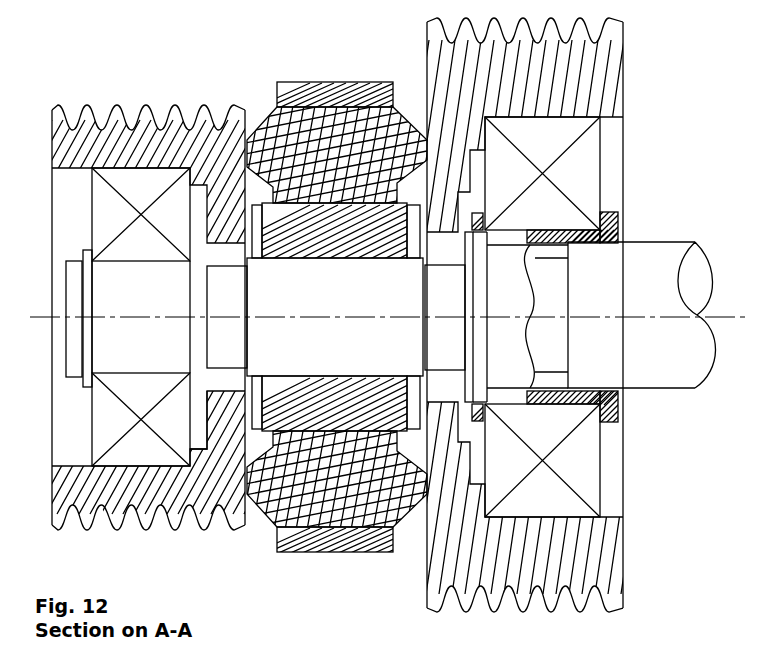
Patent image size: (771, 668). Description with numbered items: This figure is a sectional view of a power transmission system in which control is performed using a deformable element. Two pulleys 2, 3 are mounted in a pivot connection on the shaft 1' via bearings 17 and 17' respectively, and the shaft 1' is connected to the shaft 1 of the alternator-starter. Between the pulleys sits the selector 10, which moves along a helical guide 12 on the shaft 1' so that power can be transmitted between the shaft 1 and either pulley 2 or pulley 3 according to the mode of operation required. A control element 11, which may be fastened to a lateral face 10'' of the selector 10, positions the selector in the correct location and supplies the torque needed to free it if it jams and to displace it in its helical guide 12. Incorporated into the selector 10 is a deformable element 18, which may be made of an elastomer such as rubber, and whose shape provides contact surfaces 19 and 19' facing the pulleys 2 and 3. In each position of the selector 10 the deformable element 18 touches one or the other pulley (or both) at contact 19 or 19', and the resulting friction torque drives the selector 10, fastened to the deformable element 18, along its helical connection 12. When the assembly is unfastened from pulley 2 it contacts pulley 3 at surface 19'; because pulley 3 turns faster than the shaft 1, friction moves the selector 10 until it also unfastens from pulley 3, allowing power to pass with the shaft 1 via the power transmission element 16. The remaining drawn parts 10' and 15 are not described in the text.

The shaft 1 is at (601, 323).
The shaft 1' is at (561, 373).
The pulley 2 is at (210, 147).
The pulley 3 is at (497, 78).
The selector 10 is at (353, 243).
The hub bearing 10' is at (284, 254).
The lateral face 10'' is at (388, 254).
The control element 11 is at (372, 102).
The helical guide 12 is at (358, 382).
The pulley hub 15 is at (243, 456).
The power transmission element 16 is at (392, 420).
The bearing 17 is at (115, 273).
The bearing 17' is at (602, 317).
The deformable element 18 is at (352, 548).
The contact surface 19 is at (268, 485).
The contact surface 19' is at (382, 498).